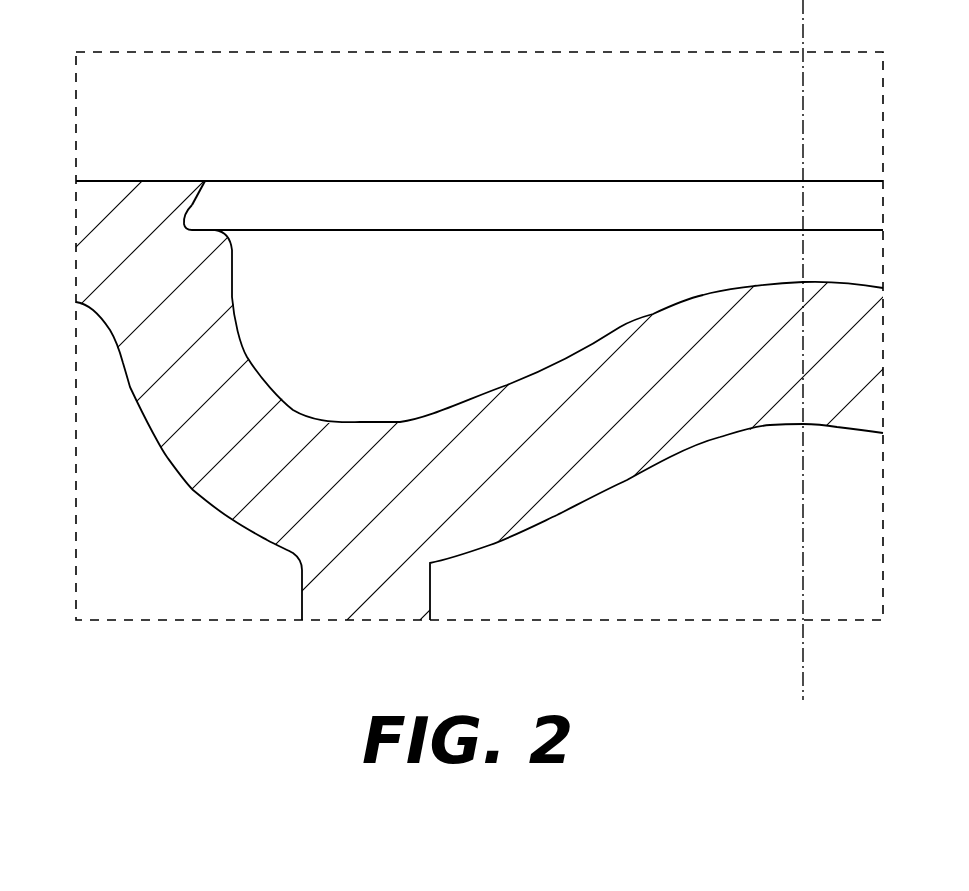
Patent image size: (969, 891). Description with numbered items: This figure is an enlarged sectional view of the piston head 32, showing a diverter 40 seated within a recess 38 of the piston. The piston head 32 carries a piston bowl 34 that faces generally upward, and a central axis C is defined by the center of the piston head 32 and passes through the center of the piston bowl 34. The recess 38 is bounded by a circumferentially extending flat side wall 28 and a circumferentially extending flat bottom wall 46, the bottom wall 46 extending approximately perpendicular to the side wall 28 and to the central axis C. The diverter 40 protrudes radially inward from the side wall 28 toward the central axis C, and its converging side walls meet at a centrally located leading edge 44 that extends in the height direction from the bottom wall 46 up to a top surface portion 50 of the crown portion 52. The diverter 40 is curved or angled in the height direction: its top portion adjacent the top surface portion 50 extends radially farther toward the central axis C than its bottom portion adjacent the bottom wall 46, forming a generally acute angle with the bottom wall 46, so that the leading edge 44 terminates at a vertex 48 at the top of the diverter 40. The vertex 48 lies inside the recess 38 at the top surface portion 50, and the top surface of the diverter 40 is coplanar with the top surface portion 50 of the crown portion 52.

The side wall 28 is at (488, 219).
The piston head 32 is at (173, 432).
The piston bowl 34 is at (323, 410).
The recess 38 is at (386, 210).
The diverter 40 is at (228, 171).
The leading edge 44 is at (198, 208).
The bottom wall 46 is at (633, 231).
The vertex 48 is at (195, 207).
The top surface portion 50 is at (185, 172).
The crown portion 52 is at (102, 172).
The central axis C is at (803, 44).